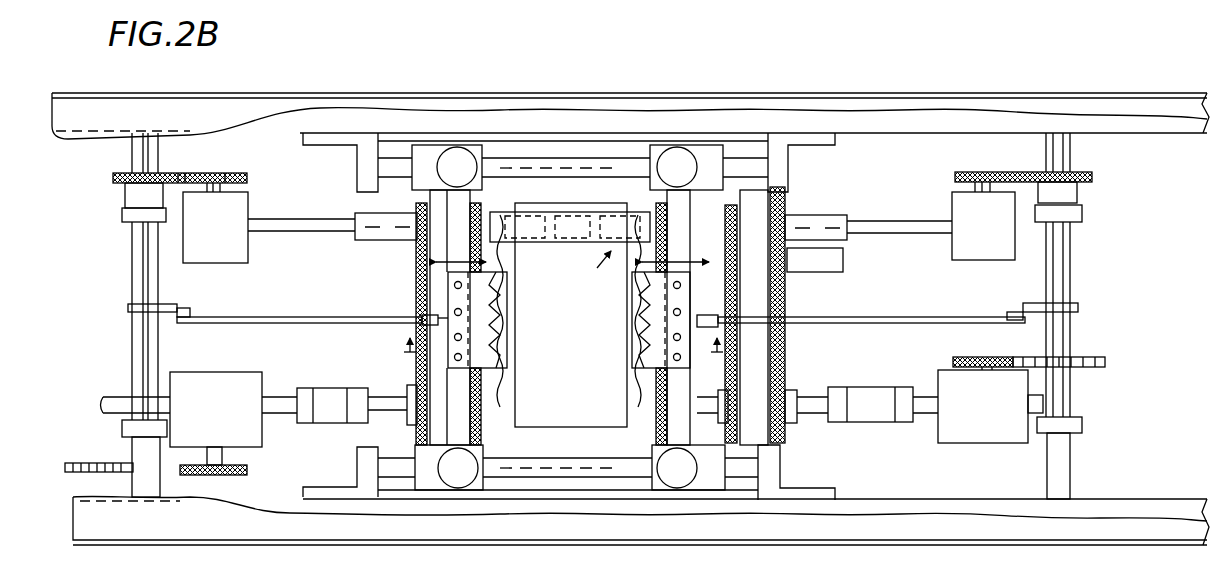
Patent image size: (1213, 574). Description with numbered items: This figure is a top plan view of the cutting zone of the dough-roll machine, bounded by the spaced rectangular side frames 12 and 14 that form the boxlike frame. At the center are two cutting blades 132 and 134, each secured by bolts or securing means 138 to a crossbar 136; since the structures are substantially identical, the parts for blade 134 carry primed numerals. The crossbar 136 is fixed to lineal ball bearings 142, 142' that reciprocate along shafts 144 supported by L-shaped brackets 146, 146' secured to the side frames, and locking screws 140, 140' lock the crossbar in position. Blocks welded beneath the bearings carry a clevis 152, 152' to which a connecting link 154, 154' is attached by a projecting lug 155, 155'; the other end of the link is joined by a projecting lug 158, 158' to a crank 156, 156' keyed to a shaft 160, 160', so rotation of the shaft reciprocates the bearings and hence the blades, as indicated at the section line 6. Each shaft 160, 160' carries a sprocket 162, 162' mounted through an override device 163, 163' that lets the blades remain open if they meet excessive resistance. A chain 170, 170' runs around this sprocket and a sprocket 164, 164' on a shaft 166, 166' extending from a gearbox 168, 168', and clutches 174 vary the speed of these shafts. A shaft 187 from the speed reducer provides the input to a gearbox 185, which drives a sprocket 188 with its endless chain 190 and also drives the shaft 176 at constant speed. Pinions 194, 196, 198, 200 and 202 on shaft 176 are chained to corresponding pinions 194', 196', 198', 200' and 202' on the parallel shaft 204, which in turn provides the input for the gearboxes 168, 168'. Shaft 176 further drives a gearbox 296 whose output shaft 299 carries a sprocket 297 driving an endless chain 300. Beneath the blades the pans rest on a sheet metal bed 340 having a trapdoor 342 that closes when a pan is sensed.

The side frame 12 is at (1143, 500).
The side frame 14 is at (1112, 126).
The cutting blade 132 is at (482, 357).
The cutting blade 134 is at (667, 332).
The crossbar 136 is at (462, 387).
The securing means 138 is at (462, 285).
The locking screw 140 is at (488, 276).
The locking screw 140' is at (680, 276).
The lineal ball bearing 142 is at (421, 279).
The lineal ball bearing 142' is at (655, 278).
The shaft 144 is at (598, 157).
The L-shaped bracket 146 is at (578, 282).
The L-shaped bracket 146' is at (832, 472).
The clevis 152 is at (501, 301).
The clevis 152' is at (762, 300).
The connecting link 154 is at (299, 302).
The connecting link 154' is at (871, 331).
The projecting lug 155 is at (405, 291).
The projecting lug 155' is at (763, 329).
The crank 156 is at (112, 316).
The crank arm 156' is at (1036, 295).
The projecting lug 158 is at (206, 299).
The projecting lug 158' is at (981, 304).
The shaft 160 is at (106, 315).
The shaft 160' is at (1094, 316).
The sprocket 162 is at (146, 168).
The sprocket 162' is at (1055, 176).
The override device 163 is at (107, 202).
The override device 163' is at (1096, 202).
The sprocket 164 is at (235, 162).
The sprocket 164' is at (958, 166).
The shaft 166 is at (215, 223).
The shaft 166' is at (983, 226).
The gearbox 168 is at (301, 240).
The gearbox 168' is at (920, 177).
The chain 170 is at (180, 162).
The chain 170' is at (1013, 166).
The clutches 174 is at (572, 271).
The shaft 176 is at (283, 410).
The gearbox 185 is at (240, 402).
The shaft 187 is at (110, 400).
The sprocket 188 is at (247, 470).
The endless chain 190 is at (87, 463).
The pinion 194 is at (361, 324).
The pinion 194' is at (358, 208).
The pinion 196 is at (520, 418).
The pinion 196' is at (440, 311).
The pinion 198 is at (743, 324).
The pinion 198' is at (624, 189).
The pinion 200 is at (758, 315).
The pinion 200' is at (791, 177).
The pinion 202 is at (809, 454).
The pinion 202' is at (786, 310).
The shaft 204 is at (270, 218).
The gearbox 296 is at (945, 383).
The sprocket 297 is at (988, 360).
The shaft 299 is at (990, 406).
The endless chain 300 is at (1090, 357).
The sheet metal bed 340 is at (627, 230).
The trapdoor 342 is at (617, 410).
The section line 6 is at (550, 352).